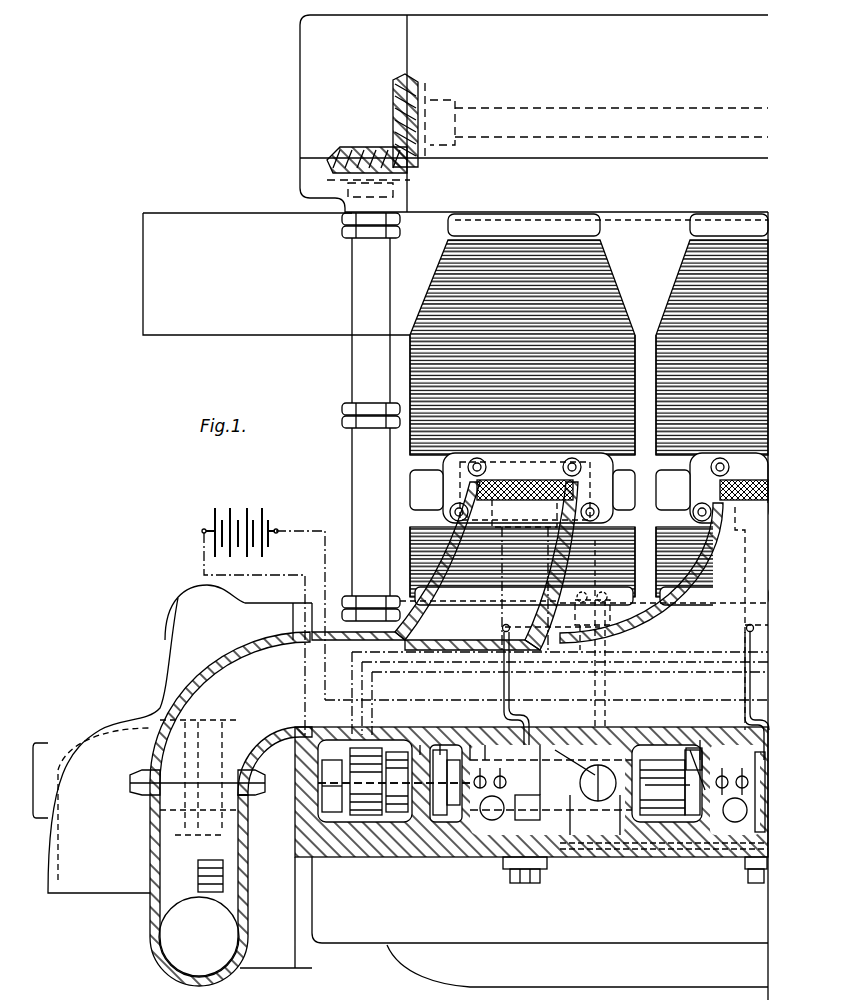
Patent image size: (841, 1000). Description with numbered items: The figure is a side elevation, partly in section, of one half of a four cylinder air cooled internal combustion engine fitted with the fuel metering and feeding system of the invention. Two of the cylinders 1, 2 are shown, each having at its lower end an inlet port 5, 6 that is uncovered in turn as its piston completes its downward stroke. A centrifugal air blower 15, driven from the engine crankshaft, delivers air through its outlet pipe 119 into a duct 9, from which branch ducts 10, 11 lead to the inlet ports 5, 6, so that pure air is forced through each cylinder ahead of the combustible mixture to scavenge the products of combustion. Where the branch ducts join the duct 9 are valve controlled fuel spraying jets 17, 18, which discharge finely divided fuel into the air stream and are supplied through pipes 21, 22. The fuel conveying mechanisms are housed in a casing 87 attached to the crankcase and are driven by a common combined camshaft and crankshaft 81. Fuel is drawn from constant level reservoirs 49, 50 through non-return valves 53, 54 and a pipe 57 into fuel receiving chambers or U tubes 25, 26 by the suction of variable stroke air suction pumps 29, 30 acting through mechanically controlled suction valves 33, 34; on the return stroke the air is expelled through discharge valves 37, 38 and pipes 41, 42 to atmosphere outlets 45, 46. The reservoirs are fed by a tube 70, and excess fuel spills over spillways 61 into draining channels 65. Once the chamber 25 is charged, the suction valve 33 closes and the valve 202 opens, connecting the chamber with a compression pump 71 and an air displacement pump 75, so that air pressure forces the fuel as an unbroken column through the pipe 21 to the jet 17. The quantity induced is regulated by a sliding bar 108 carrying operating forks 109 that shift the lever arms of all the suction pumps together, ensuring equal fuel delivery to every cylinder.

The cylinder 1 is at (458, 298).
The cylinder 2 is at (700, 284).
The inlet port 5 is at (486, 566).
The inlet port 6 is at (664, 616).
The duct 9 is at (396, 740).
The branch duct 10 is at (525, 588).
The branch duct 11 is at (664, 596).
The centrifugal air blower 15 is at (182, 607).
The fuel spraying jet 17 is at (502, 630).
The fuel spraying jet 18 is at (746, 630).
The pipe 21 is at (510, 690).
The pipe 22 is at (745, 684).
The fuel receiving chamber or U tube 25 is at (480, 822).
The fuel receiving chamber or U tube 26 is at (740, 775).
The variable stroke air suction pump 29 is at (470, 745).
The variable stroke air suction pump 30 is at (694, 745).
The suction valve 33 is at (486, 745).
The suction valve 34 is at (718, 775).
The discharge valve 37 is at (442, 822).
The discharge valve 38 is at (712, 840).
The pipe 41 is at (422, 742).
The pipe 42 is at (690, 750).
The atmosphere outlet 45 is at (442, 742).
The atmosphere outlet 46 is at (696, 740).
The reservoir 49 is at (494, 858).
The reservoir 50 is at (755, 883).
The non-return valve 53 is at (500, 857).
The non-return valve 54 is at (748, 840).
The pipe 57 is at (520, 883).
The spillway or overflow pipe 61 is at (578, 840).
The draining channel or pipe 65 is at (538, 883).
The tube 70 is at (630, 830).
The compression pump 71 is at (610, 770).
The air displacement pump 75 is at (575, 759).
The combined camshaft and crankshaft 81 is at (650, 785).
The casing 87 is at (362, 822).
The sliding bar or shaft 108 is at (388, 822).
The operating fork 109 is at (425, 822).
The outlet pipe 119 is at (162, 938).
The valve 202 is at (560, 745).